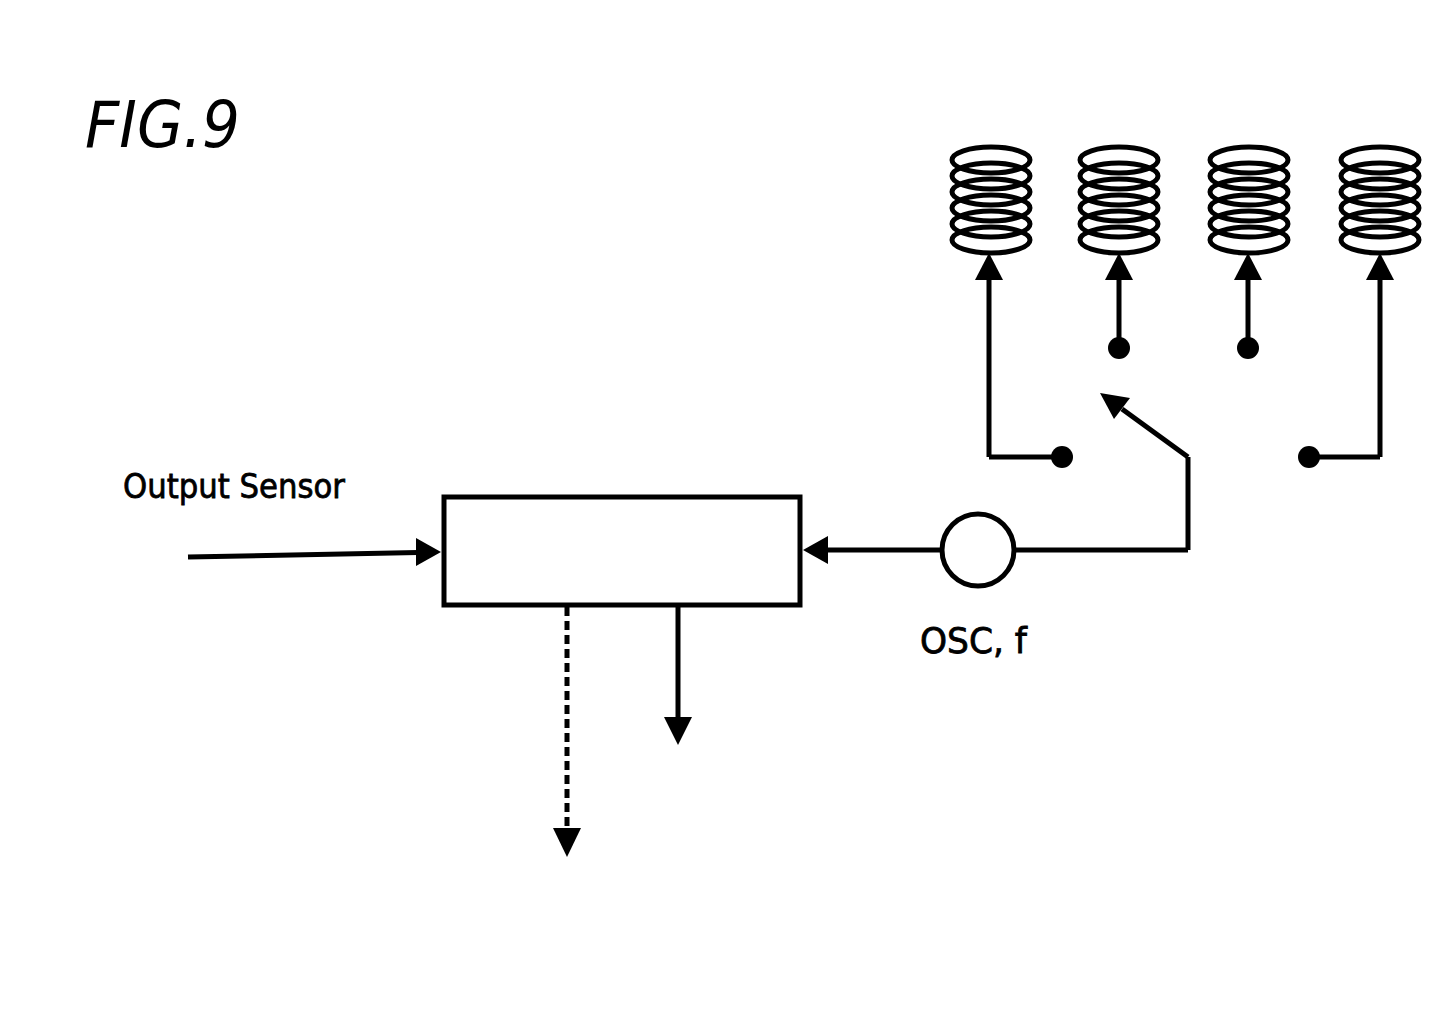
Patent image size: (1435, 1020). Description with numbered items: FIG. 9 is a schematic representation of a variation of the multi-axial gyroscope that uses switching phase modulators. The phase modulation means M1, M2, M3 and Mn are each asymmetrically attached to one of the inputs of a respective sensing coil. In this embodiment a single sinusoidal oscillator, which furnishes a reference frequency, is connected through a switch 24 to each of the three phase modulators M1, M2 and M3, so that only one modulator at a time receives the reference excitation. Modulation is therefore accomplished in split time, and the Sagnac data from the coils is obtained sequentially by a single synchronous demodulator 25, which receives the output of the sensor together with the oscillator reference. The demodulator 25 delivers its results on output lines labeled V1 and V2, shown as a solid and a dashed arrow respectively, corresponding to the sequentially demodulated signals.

The switch 24 is at (1184, 448).
The synchronous demodulator 25 is at (622, 520).
The phase modulator M1 is at (991, 262).
The phase modulator M2 is at (1119, 208).
The phase modulator M3 is at (1249, 208).
The phase modulator Mn is at (1380, 262).
The output voltage V1 is at (702, 676).
The output voltage V2 is at (591, 732).